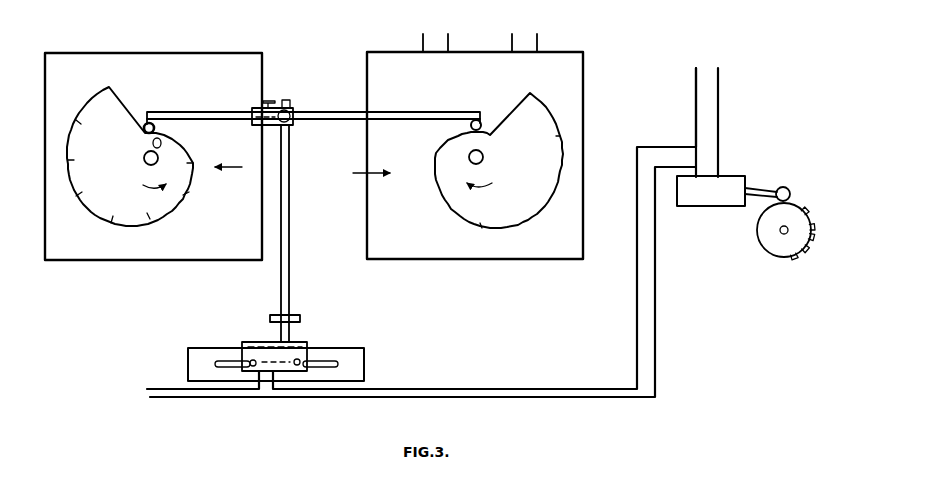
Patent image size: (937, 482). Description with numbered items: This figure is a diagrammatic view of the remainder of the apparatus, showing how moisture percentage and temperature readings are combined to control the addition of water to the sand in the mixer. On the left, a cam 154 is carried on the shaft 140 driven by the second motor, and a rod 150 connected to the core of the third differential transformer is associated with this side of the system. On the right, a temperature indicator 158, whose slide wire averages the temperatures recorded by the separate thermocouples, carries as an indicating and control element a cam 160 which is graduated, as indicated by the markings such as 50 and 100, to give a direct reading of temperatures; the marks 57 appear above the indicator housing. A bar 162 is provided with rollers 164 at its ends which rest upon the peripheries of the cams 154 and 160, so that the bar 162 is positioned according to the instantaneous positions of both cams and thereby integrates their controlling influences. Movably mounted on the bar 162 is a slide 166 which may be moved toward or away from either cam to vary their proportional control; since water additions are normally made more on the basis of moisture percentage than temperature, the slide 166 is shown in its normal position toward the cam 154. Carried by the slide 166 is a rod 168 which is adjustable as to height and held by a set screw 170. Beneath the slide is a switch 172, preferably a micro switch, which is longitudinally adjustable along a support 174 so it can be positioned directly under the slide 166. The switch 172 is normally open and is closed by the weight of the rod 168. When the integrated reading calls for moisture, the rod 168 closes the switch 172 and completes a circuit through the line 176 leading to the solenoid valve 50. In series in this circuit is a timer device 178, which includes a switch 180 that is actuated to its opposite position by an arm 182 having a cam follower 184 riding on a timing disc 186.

The solenoid valve 50 is at (556, 136).
The contacts 57 is at (538, 40).
The scale graduation 100 is at (480, 224).
The shaft 140 is at (145, 160).
The rod 150 is at (436, 157).
The cam 154 is at (177, 210).
The temperature indicator 158 is at (503, 260).
The cam 160 is at (538, 212).
The bar 162 is at (334, 120).
The rollers 164 is at (156, 128).
The slide 166 is at (272, 125).
The rod 168 is at (290, 213).
The set screw 170 is at (290, 106).
The switch 172 is at (303, 342).
The support 174 is at (352, 348).
The line 176 is at (500, 385).
The timer device 178 is at (720, 211).
The switch 180 is at (723, 185).
The arm 182 is at (762, 187).
The cam follower 184 is at (789, 190).
The timing disc 186 is at (773, 243).